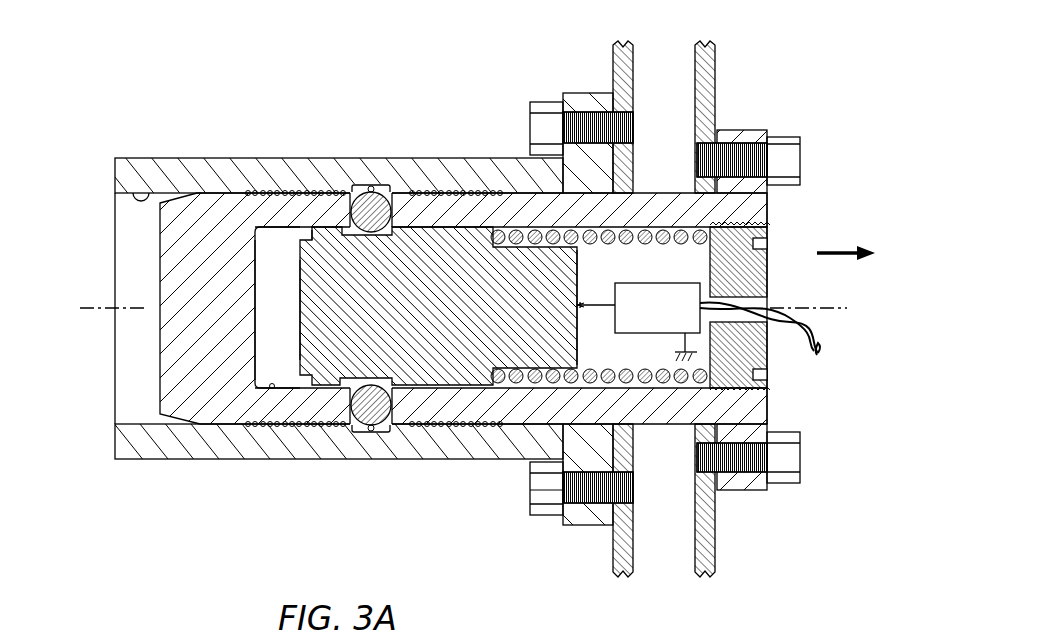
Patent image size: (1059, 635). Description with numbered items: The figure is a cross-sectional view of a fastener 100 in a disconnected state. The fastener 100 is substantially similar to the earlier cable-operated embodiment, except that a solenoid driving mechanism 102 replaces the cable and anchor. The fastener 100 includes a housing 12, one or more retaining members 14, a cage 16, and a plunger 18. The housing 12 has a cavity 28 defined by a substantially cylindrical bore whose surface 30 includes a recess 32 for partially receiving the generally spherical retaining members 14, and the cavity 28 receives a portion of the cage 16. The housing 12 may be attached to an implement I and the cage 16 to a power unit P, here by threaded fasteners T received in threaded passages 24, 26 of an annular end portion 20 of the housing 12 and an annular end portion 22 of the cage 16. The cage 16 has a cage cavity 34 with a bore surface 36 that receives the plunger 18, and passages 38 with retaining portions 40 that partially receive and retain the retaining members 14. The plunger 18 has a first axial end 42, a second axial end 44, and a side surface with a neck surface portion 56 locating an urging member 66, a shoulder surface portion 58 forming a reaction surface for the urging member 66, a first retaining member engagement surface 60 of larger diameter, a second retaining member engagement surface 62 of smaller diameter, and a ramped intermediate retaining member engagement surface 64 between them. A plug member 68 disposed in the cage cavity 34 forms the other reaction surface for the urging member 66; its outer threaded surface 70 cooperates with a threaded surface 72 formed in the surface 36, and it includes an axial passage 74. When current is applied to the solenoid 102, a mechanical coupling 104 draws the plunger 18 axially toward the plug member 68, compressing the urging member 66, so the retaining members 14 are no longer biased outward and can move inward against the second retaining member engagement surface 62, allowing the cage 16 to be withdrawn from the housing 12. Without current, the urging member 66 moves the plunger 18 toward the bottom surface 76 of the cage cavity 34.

The fastener 100 is at (496, 299).
The housing 12 is at (329, 291).
The surface 30 is at (119, 157).
The plunger 18 is at (215, 424).
The cavity 28 is at (496, 310).
The bottom surface 76 is at (255, 322).
The cage cavity 34 is at (283, 238).
The second retaining member engagement surface 62 is at (322, 232).
The surface 36 is at (272, 390).
The second axial end 44 is at (402, 319).
The first retaining member engagement surface 60 is at (435, 228).
The intermediate retaining member engagement surface 64 is at (392, 233).
The first axial end 42 is at (578, 356).
The retaining members 14 is at (359, 311).
The recess 32 is at (377, 311).
The passages 38 is at (386, 212).
The retaining portions 40 is at (370, 187).
The shoulder surface portion 58 is at (571, 316).
The neck surface portion 56 is at (512, 378).
The threaded surface 72 is at (772, 299).
The outer threaded surface 70 is at (766, 236).
The plug member 68 is at (768, 388).
The axial passage 74 is at (760, 303).
The mechanical coupling 104 is at (598, 310).
The solenoid driving mechanism 102 is at (694, 338).
The cage 16 is at (636, 299).
The annular end portion 20 is at (582, 100).
The annular end portion 22 is at (735, 140).
The implement I is at (634, 51).
The power unit P is at (716, 56).
The threaded passages 24 is at (598, 112).
The threaded passages 26 is at (745, 160).
The threaded fastener T is at (530, 115).
The urging member 66 is at (530, 506).